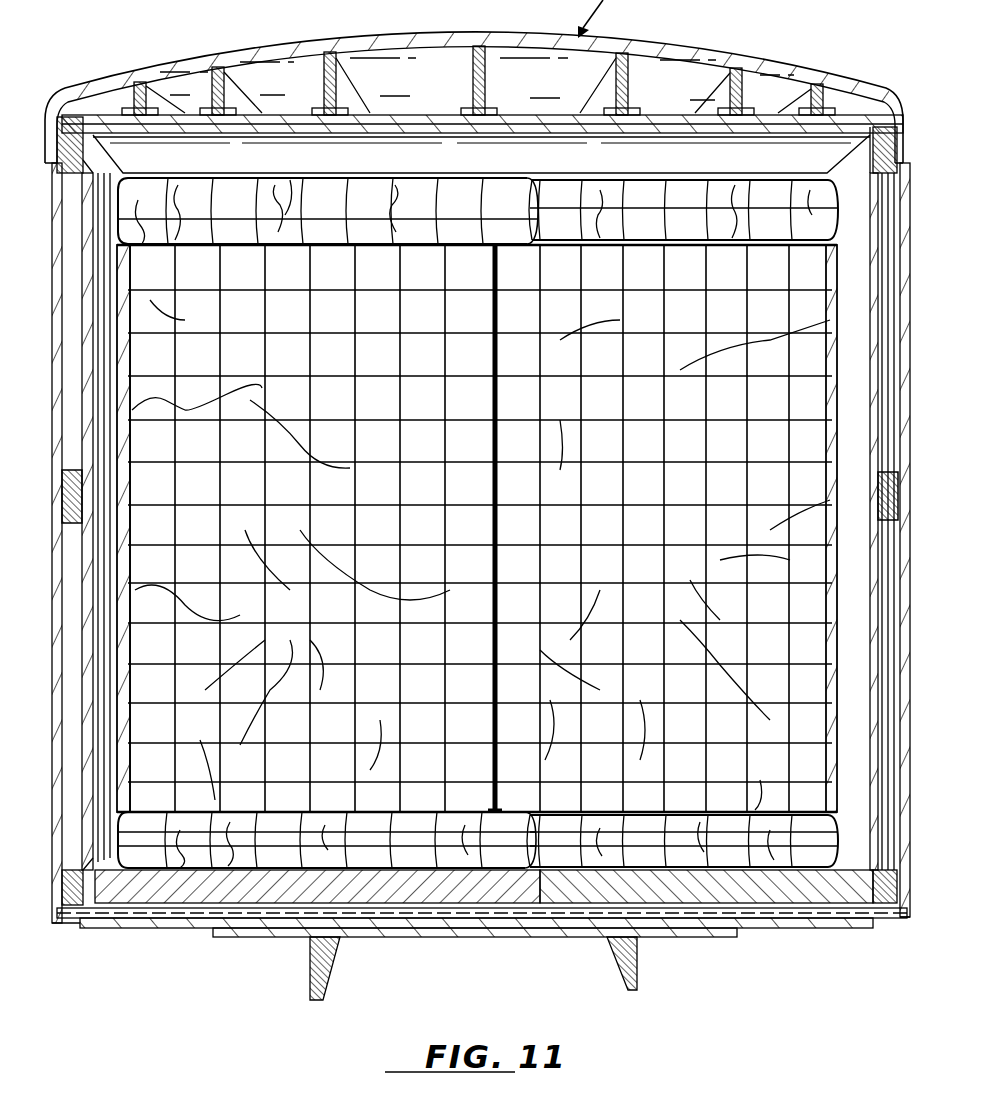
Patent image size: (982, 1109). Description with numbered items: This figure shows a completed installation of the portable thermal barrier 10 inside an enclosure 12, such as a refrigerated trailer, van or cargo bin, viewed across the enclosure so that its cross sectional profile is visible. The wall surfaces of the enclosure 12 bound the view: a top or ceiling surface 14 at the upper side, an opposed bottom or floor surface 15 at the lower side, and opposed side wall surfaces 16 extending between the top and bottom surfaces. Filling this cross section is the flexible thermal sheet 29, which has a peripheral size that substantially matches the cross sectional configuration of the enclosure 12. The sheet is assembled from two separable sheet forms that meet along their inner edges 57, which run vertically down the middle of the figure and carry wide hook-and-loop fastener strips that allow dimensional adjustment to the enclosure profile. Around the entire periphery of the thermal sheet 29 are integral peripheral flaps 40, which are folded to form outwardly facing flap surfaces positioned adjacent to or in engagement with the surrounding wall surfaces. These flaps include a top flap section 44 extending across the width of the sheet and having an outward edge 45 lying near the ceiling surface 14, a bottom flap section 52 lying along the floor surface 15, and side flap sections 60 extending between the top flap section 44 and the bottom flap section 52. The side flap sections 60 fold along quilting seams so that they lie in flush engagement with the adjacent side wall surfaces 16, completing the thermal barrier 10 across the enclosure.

The portable thermal barrier 10 is at (185, 878).
The enclosure 12 is at (745, 153).
The top or ceiling surface 14 is at (545, 142).
The bottom or floor surface 15 is at (548, 880).
The side wall surfaces 16 is at (862, 587).
The flexible thermal sheet 29 is at (515, 200).
The integral peripheral flaps 40 is at (130, 352).
The top flap section 44 is at (542, 202).
The outward edge 45 is at (372, 250).
The bottom flap section 52 is at (345, 800).
The inner edge 57 is at (490, 486).
The side flap sections 60 is at (128, 452).